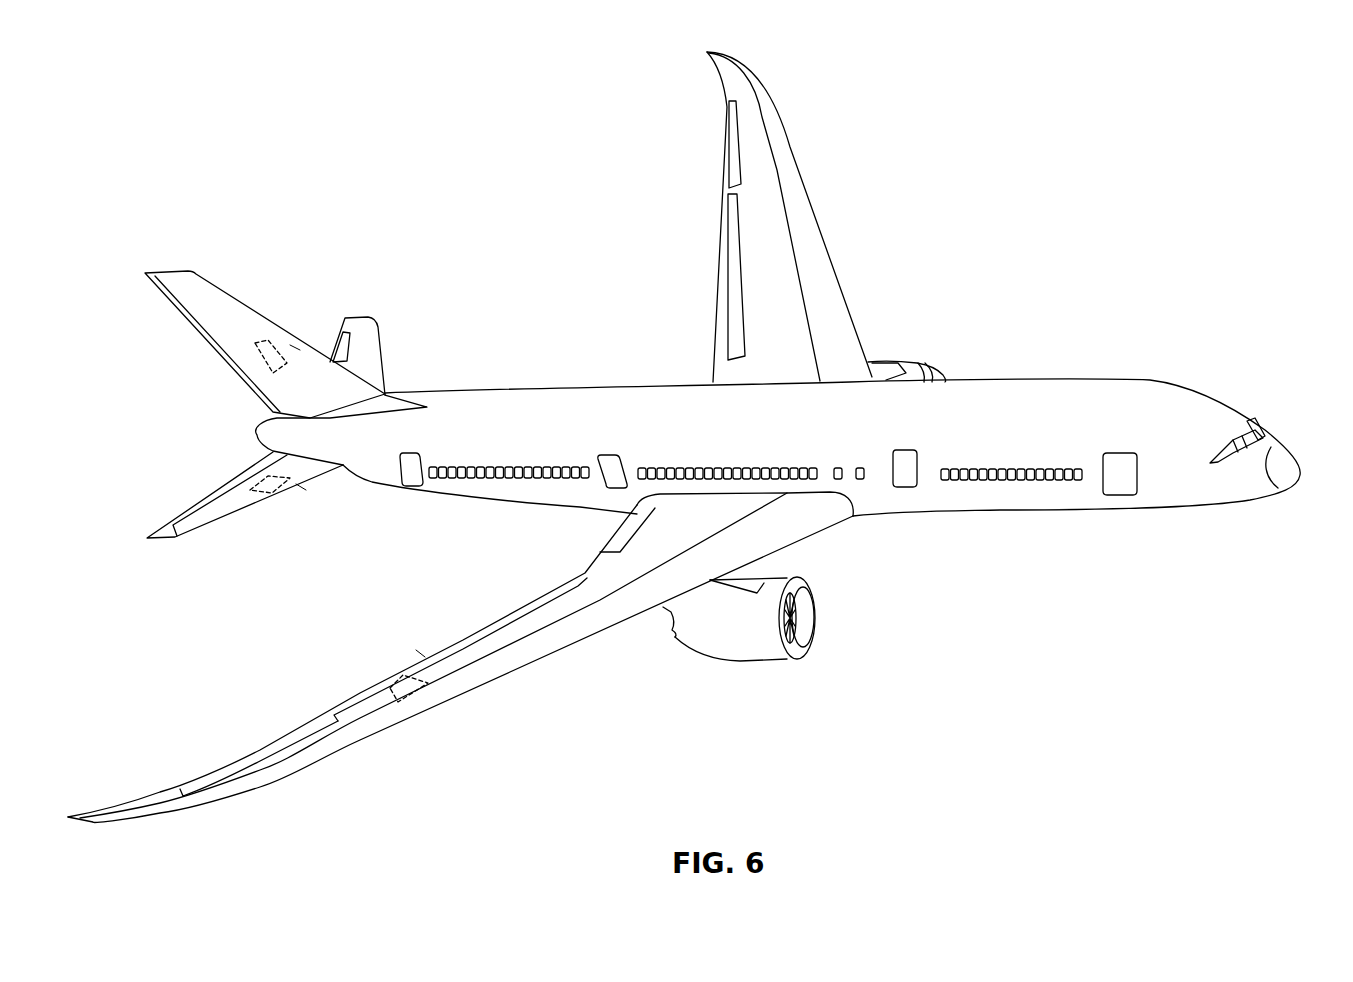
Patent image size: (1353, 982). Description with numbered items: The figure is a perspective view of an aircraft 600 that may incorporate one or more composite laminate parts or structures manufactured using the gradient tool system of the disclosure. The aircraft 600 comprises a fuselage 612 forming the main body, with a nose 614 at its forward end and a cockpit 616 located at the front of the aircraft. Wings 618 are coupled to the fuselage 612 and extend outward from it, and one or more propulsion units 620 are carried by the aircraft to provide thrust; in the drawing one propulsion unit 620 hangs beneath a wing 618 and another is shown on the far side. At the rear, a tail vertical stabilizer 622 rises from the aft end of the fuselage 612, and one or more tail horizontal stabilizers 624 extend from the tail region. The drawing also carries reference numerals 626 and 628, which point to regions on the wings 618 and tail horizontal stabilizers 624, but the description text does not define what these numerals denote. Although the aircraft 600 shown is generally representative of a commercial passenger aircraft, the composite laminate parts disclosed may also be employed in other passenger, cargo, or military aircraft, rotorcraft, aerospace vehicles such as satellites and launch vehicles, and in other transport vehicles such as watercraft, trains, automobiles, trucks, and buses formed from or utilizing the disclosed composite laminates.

The aircraft 600 is at (1044, 173).
The fuselage 612 is at (1010, 392).
The nose 614 is at (1278, 475).
The cockpit 616 is at (1255, 425).
The wings 618 is at (773, 137).
The propulsion units 620 is at (918, 360).
The tail vertical stabilizer 622 is at (216, 305).
The tail horizontal stabilizers 624 is at (372, 352).
The outer surface location 626 is at (296, 348).
The embedded component 628 is at (272, 340).